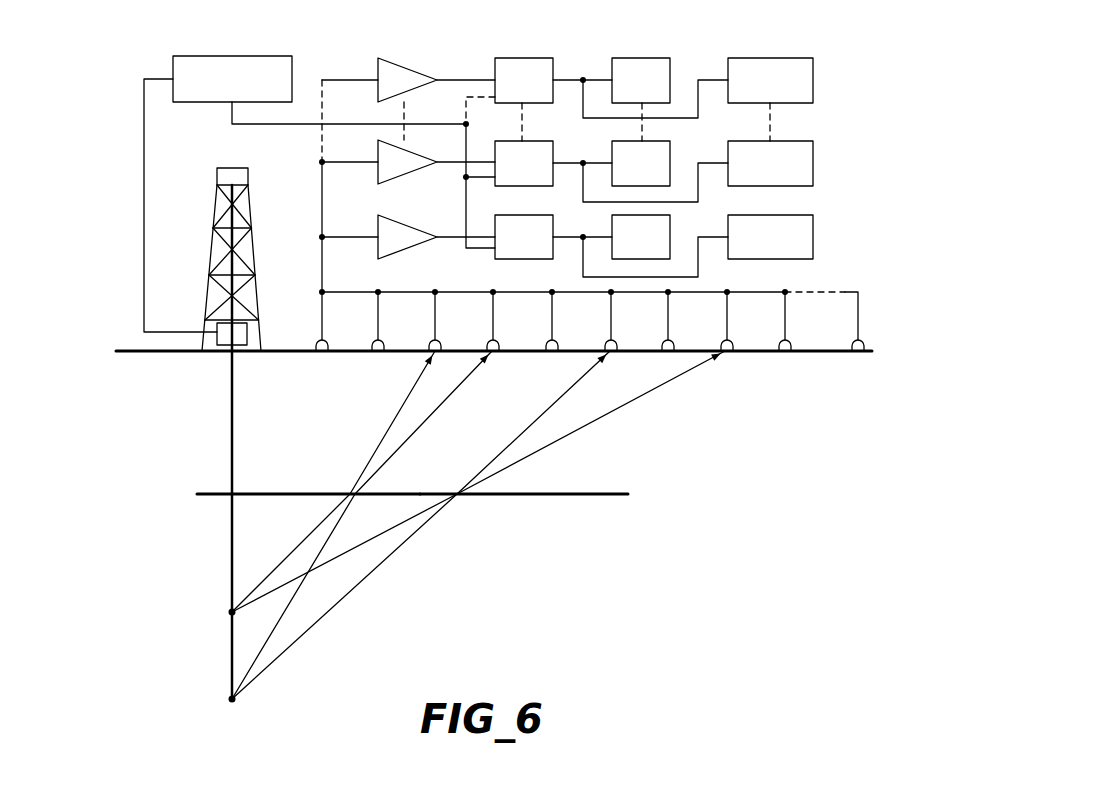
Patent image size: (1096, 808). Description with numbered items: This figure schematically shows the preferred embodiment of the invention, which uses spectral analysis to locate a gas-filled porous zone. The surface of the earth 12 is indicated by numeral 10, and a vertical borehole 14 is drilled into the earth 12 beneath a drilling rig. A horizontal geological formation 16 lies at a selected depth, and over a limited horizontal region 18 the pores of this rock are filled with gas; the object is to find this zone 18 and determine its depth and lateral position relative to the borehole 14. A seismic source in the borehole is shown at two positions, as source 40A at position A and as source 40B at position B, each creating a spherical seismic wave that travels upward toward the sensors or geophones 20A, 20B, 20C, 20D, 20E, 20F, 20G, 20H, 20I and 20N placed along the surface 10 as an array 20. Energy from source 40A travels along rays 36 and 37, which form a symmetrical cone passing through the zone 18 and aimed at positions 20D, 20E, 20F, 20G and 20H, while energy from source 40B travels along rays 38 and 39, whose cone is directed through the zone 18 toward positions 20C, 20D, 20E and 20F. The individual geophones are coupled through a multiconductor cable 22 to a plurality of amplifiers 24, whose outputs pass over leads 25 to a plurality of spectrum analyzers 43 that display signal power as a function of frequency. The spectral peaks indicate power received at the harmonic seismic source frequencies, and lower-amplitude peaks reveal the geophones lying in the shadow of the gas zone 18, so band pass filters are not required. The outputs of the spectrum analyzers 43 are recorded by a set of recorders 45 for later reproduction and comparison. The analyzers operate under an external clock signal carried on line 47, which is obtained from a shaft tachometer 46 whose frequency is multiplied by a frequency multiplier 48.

The surface of the earth 10 is at (130, 351).
The earth 12 is at (800, 431).
The vertical borehole 14 is at (232, 423).
The horizontal geological formation 16 is at (560, 496).
The gas-filled porous rock zone 18 is at (402, 496).
The geophone array 20 is at (850, 286).
The geophone 20A is at (328, 341).
The geophone 20B is at (384, 341).
The geophone 20C is at (441, 341).
The geophone 20D is at (499, 341).
The geophone 20E is at (558, 341).
The geophone 20F is at (617, 341).
The geophone 20G is at (674, 341).
The geophone 20H is at (733, 341).
The geophone 20I is at (791, 341).
The geophone 20N is at (864, 341).
The multiconductor cable 22 is at (321, 265).
The amplifier 24 is at (378, 70).
The lead 25 is at (457, 80).
The ray 36 is at (410, 437).
The ray 37 is at (574, 437).
The ray 38 is at (382, 437).
The ray 39 is at (533, 422).
The seismic source at position A 40A is at (229, 616).
The seismic source at position B 40B is at (234, 702).
The spectrum analyzer 43 is at (553, 70).
The recorder 45 is at (670, 72).
The shaft tachometer 46 is at (248, 333).
The clock signal line 47 is at (145, 236).
The frequency multiplier 48 is at (214, 104).